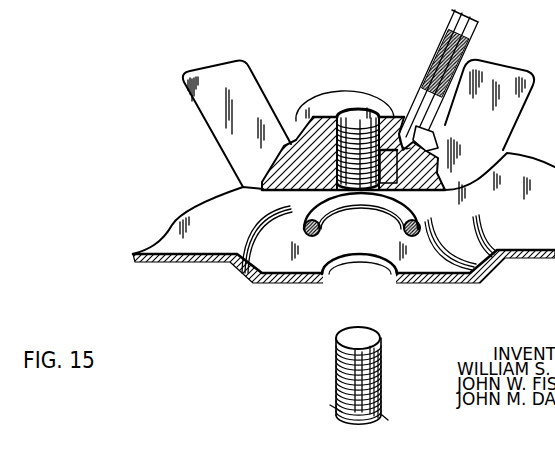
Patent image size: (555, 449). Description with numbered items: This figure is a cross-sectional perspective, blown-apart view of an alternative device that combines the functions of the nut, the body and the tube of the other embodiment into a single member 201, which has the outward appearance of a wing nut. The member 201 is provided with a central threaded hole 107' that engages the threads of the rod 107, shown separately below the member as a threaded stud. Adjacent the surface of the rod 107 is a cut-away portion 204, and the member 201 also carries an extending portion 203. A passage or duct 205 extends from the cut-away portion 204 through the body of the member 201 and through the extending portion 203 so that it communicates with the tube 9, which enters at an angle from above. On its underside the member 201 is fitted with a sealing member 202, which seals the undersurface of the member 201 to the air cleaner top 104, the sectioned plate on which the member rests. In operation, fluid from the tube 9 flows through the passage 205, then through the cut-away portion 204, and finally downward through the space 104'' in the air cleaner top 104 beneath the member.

The tube 9 is at (449, 33).
The central threaded hole 107' is at (339, 125).
The passage or duct 205 is at (418, 110).
The extending portion 203 is at (430, 118).
The member 201 is at (283, 197).
The sealing member 202 is at (322, 218).
The cut-away portion 204 is at (397, 163).
The air cleaner top 104 is at (344, 251).
The space 104'' is at (347, 286).
The rod 107 is at (380, 375).